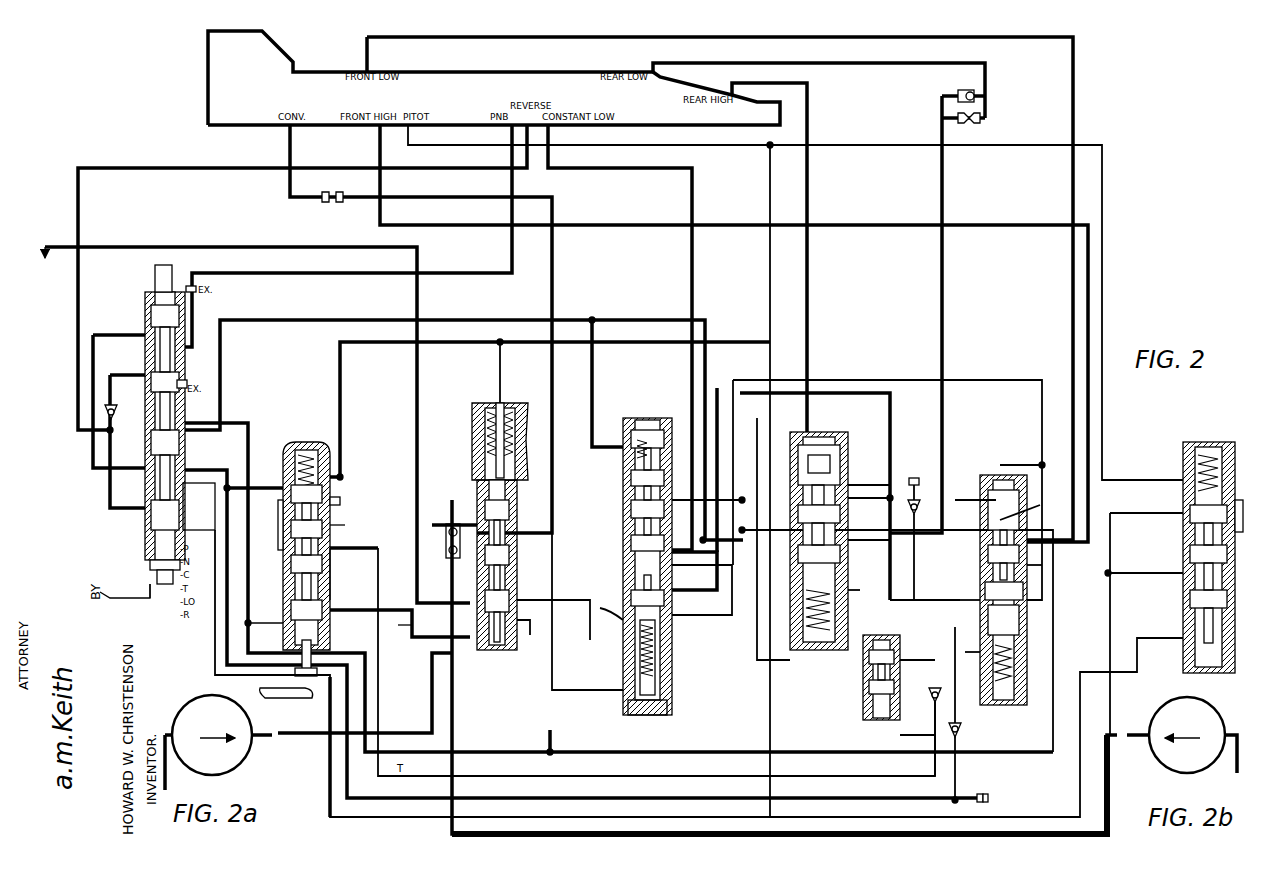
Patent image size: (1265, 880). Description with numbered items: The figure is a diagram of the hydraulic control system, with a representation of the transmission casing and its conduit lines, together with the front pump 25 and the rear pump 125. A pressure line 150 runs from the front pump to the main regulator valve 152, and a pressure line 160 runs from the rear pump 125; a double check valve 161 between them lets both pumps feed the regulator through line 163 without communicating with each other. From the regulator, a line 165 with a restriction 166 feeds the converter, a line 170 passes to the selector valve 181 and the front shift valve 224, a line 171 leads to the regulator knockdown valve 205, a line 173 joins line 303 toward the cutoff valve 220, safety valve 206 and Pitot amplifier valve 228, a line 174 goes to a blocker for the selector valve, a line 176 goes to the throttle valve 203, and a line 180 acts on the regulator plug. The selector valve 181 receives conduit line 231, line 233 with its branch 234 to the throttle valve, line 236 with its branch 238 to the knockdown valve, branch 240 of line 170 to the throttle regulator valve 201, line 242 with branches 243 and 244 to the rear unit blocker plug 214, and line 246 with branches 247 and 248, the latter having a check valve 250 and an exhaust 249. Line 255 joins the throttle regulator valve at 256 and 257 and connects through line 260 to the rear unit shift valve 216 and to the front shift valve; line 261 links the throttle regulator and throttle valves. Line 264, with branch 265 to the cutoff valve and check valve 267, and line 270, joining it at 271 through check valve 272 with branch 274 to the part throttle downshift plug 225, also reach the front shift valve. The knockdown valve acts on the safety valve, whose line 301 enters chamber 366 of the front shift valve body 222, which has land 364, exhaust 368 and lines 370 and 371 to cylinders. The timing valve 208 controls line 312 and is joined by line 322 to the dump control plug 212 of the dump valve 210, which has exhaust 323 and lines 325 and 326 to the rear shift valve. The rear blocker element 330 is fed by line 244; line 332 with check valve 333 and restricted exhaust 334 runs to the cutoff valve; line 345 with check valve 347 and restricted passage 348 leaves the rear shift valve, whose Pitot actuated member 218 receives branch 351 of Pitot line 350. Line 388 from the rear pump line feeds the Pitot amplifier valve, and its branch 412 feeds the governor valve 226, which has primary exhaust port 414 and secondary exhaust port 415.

In FIG. 2a, the pump 25 is at (198, 712).
In FIG. 2b, the rear pump 125 is at (1160, 770).
In FIG. 2a, the pressure line 150 is at (258, 740).
In FIG. 2, the main regulator valve 152 is at (472, 420).
In FIG. 2, the pressure line 160 is at (1107, 778).
In FIG. 2b, the pressure line 160 is at (1155, 705).
In FIG. 2, the double check valve 161 is at (460, 560).
In FIG. 2, the line 163 is at (466, 528).
In FIG. 2, the line 165 is at (290, 146).
In FIG. 2, the restriction 166 is at (330, 202).
In FIG. 2, the line 170 is at (118, 336).
In FIG. 2, the line 171 is at (561, 610).
In FIG. 2, the line 173 is at (716, 530).
In FIG. 2, the line 174 is at (60, 247).
In FIG. 2, the line 176 is at (428, 618).
In FIG. 2, the line 180 is at (500, 355).
In FIG. 2, the selector valve 181 is at (143, 324).
In FIG. 2, the throttle regulator valve 201 is at (296, 446).
In FIG. 2, the throttle valve 203 is at (345, 528).
In FIG. 2, the regulator knockdown valve 205 is at (622, 424).
In FIG. 2, the safety valve 206 is at (622, 520).
In FIG. 2, the timing valve 208 is at (672, 570).
In FIG. 2, the dump valve 210 is at (345, 608).
In FIG. 2, the dump control plug 212 is at (672, 690).
In FIG. 2, the rear unit blocker plug 214 is at (848, 455).
In FIG. 2, the rear unit shift valve 216 is at (848, 545).
In FIG. 2, the Pitot actuated member 218 is at (850, 598).
In FIG. 2, the cutoff valve 220 is at (853, 713).
In FIG. 2, the front shift valve 222 is at (980, 488).
In FIG. 2, the front shift valve 224 is at (972, 592).
In FIG. 2, the part throttle downshift plug 225 is at (1035, 660).
In FIG. 2, the governor valve 226 is at (1178, 598).
In FIG. 2, the Pitot amplifier valve 228 is at (1182, 460).
In FIG. 2, the conduit line 231 is at (512, 156).
In FIG. 2, the line 233 is at (230, 410).
In FIG. 2, the branch 234 is at (262, 615).
In FIG. 2, the line 236 is at (220, 340).
In FIG. 2, the branch 238 is at (580, 438).
In FIG. 2, the branch 240 is at (270, 485).
In FIG. 2, the line 242 is at (1158, 660).
In FIG. 2, the branch 243 is at (175, 550).
In FIG. 2, the branch 244 is at (808, 428).
In FIG. 2, the line 246 is at (527, 172).
In FIG. 2, the branch 247 is at (100, 470).
In FIG. 2, the branch 248 is at (112, 370).
In FIG. 2, the exhaust port 249 is at (184, 384).
In FIG. 2, the check valve 250 is at (113, 405).
In FIG. 2, the line 255 is at (340, 450).
In FIG. 2, the connection 256 is at (340, 502).
In FIG. 2, the connection 257 is at (340, 470).
In FIG. 2, the line 260 is at (856, 485).
In FIG. 2, the line 261 is at (280, 555).
In FIG. 2, the line 264 is at (372, 543).
In FIG. 2, the branch 265 is at (900, 735).
In FIG. 2, the check valve 267 is at (950, 700).
In FIG. 2, the line 270 is at (575, 798).
In FIG. 2, the connection 271 is at (955, 686).
In FIG. 2, the check valve 272 is at (964, 728).
In FIG. 2, the branch 274 is at (972, 760).
In FIG. 2, the line 301 is at (716, 388).
In FIG. 2, the line 303 is at (1165, 494).
In FIG. 2, the line 312 is at (548, 150).
In FIG. 2, the line 322 is at (603, 686).
In FIG. 2, the ensmalled exhaust 323 is at (600, 609).
In FIG. 2, the line 325 is at (685, 615).
In FIG. 2, the line 326 is at (807, 98).
In FIG. 2, the movable element 330 is at (815, 464).
In FIG. 2, the line 332 is at (851, 483).
In FIG. 2, the check valve 333 is at (920, 505).
In FIG. 2, the restricted exhaust 334 is at (915, 470).
In FIG. 2, the line 345 is at (653, 62).
In FIG. 2, the check valve 347 is at (962, 92).
In FIG. 2, the restricted passage 348 is at (972, 122).
In FIG. 2, the Pitot pressure line 350 is at (1102, 160).
In FIG. 2, the branch 351 is at (770, 190).
In FIG. 2, the land 364 is at (1004, 591).
In FIG. 2, the chamber 366 is at (974, 503).
In FIG. 2, the exhaust 368 is at (1037, 511).
In FIG. 2, the line 370 is at (380, 150).
In FIG. 2, the line 371 is at (367, 50).
In FIG. 2, the pressure line 388 is at (1140, 520).
In FIG. 2, the line 412 is at (1128, 573).
In FIG. 2, the primary exhaust port 414 is at (1183, 588).
In FIG. 2, the secondary exhaust port 415 is at (1205, 630).